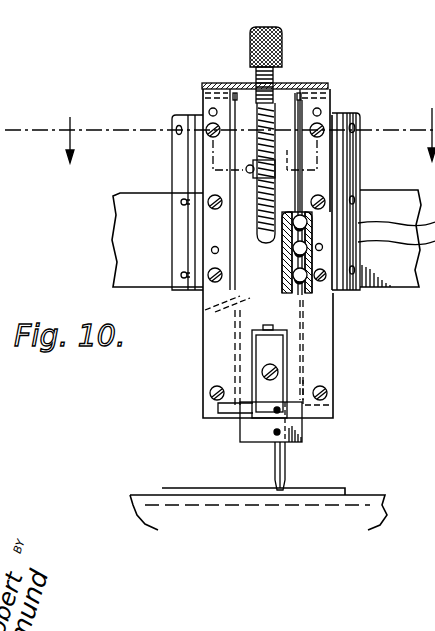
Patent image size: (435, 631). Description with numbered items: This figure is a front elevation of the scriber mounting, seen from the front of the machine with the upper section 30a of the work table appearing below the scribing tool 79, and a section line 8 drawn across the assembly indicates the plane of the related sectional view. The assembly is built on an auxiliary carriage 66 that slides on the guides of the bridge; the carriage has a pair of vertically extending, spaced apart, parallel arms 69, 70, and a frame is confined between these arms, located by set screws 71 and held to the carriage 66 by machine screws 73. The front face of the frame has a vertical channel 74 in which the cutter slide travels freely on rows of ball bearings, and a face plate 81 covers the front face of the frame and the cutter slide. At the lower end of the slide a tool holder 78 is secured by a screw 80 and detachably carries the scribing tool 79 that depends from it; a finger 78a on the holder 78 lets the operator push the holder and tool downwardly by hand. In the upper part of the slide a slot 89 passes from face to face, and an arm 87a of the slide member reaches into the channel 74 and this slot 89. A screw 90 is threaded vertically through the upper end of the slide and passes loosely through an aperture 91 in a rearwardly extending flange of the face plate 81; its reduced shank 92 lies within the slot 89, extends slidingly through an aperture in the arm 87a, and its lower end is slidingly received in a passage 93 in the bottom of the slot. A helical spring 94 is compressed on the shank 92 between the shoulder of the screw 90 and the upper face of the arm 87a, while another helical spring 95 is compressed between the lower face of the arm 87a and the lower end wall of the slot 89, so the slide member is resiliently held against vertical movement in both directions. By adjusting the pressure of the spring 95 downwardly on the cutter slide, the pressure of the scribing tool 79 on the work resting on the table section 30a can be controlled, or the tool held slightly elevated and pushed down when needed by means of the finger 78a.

The section line 8- 8 is at (220, 135).
The auxiliary carriage 66 is at (120, 207).
The arm 69 is at (362, 118).
The arm 70 is at (175, 118).
The set screws 71 is at (183, 118).
The machine screws 73 is at (320, 118).
The vertical channel 74 is at (262, 228).
The tool holder 78 is at (262, 430).
The finger 78a is at (225, 408).
The scribing tool 79 is at (290, 465).
The screw 80 is at (272, 366).
The face plate 81 is at (323, 332).
The arm 87a is at (325, 173).
The slot 89 is at (335, 196).
The screw 90 is at (274, 72).
The aperture 91 is at (279, 84).
The reduced shank 92 is at (333, 151).
The passage 93 is at (206, 300).
The helical spring 94 is at (250, 34).
The helical spring 95 is at (355, 197).
The table section 30a is at (205, 548).